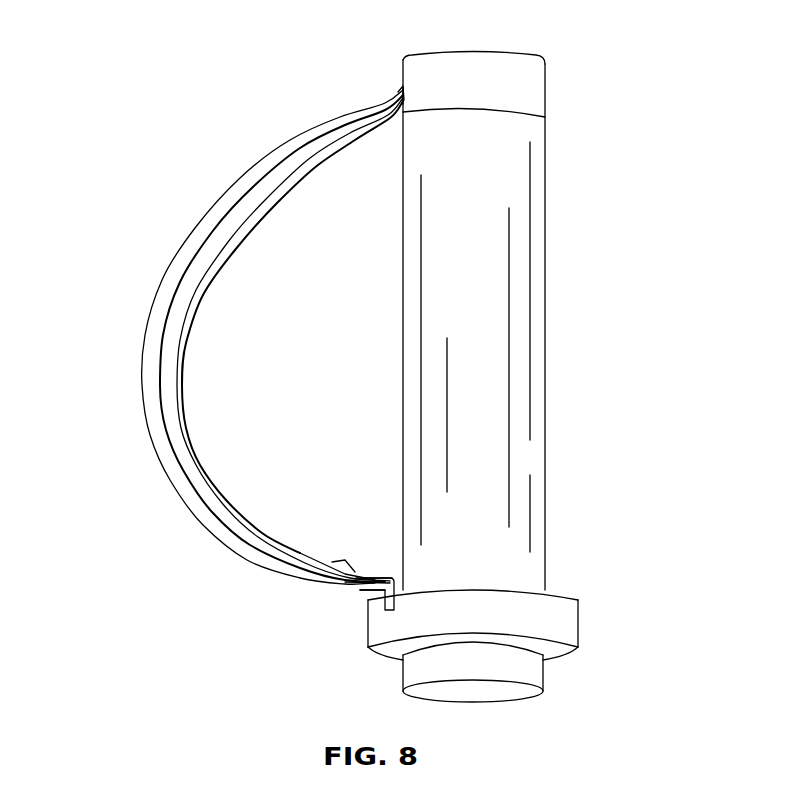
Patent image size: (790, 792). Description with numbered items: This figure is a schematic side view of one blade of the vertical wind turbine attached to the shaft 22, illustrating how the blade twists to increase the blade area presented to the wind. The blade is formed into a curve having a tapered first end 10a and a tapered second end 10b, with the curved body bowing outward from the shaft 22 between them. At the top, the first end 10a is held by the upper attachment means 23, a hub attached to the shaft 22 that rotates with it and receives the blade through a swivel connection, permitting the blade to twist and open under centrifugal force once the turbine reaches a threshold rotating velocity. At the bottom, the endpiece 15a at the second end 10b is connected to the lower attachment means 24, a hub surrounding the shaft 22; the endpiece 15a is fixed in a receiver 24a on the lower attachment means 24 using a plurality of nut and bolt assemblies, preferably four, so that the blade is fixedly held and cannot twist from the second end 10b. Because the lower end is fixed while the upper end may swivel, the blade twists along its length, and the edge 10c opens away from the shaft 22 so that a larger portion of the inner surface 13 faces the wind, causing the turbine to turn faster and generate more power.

The tapered first end 10a is at (371, 73).
The tapered second end 10b is at (335, 607).
The edge 10c is at (198, 237).
The inner surface 13 is at (202, 278).
The endpiece 15a is at (363, 585).
The shaft 22 is at (493, 318).
The upper attachment means 23 is at (528, 75).
The lower attachment means 24 is at (558, 617).
The receiver 24a is at (373, 573).